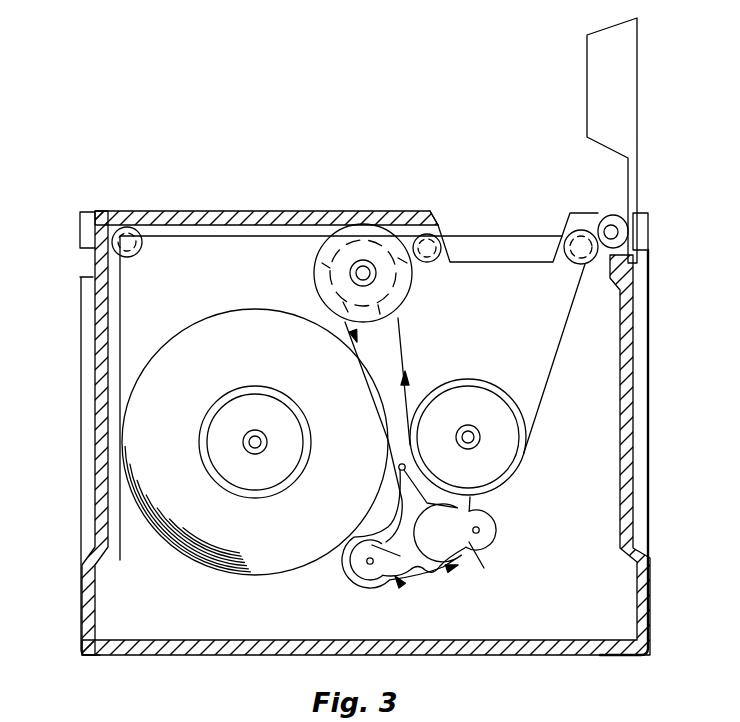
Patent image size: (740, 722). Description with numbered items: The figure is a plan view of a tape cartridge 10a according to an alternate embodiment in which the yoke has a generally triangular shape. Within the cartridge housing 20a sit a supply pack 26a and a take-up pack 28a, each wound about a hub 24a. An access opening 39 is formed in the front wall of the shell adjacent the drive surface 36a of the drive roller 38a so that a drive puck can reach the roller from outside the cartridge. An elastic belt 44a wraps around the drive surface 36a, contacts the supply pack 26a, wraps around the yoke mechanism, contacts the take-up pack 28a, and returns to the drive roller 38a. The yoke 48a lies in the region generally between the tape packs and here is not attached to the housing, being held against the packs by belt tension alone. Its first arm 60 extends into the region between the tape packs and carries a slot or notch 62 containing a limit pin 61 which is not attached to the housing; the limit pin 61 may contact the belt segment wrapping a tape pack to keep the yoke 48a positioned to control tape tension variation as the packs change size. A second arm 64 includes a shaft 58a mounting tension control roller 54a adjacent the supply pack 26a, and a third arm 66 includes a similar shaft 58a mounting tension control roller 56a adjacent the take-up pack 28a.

The tape cartridge 10a is at (345, 170).
The cartridge housing 20a is at (263, 619).
The access opening 39 is at (426, 214).
The supply tape reel 26a is at (190, 328).
The take-up pack 28a is at (509, 486).
The reel hub 24a is at (278, 481).
The drive roller 36a is at (316, 286).
The tape leader 38a is at (403, 286).
The tape 44a is at (403, 346).
The yoke 48a is at (398, 580).
The tension control roller 54a is at (356, 582).
The tension control roller 56a is at (493, 550).
The shaft 58a is at (371, 564).
The first arm 60 is at (405, 491).
The limit pin 61 is at (400, 462).
The slot or notch 62 is at (398, 466).
The second arm 64 is at (486, 570).
The third arm 66 is at (372, 545).